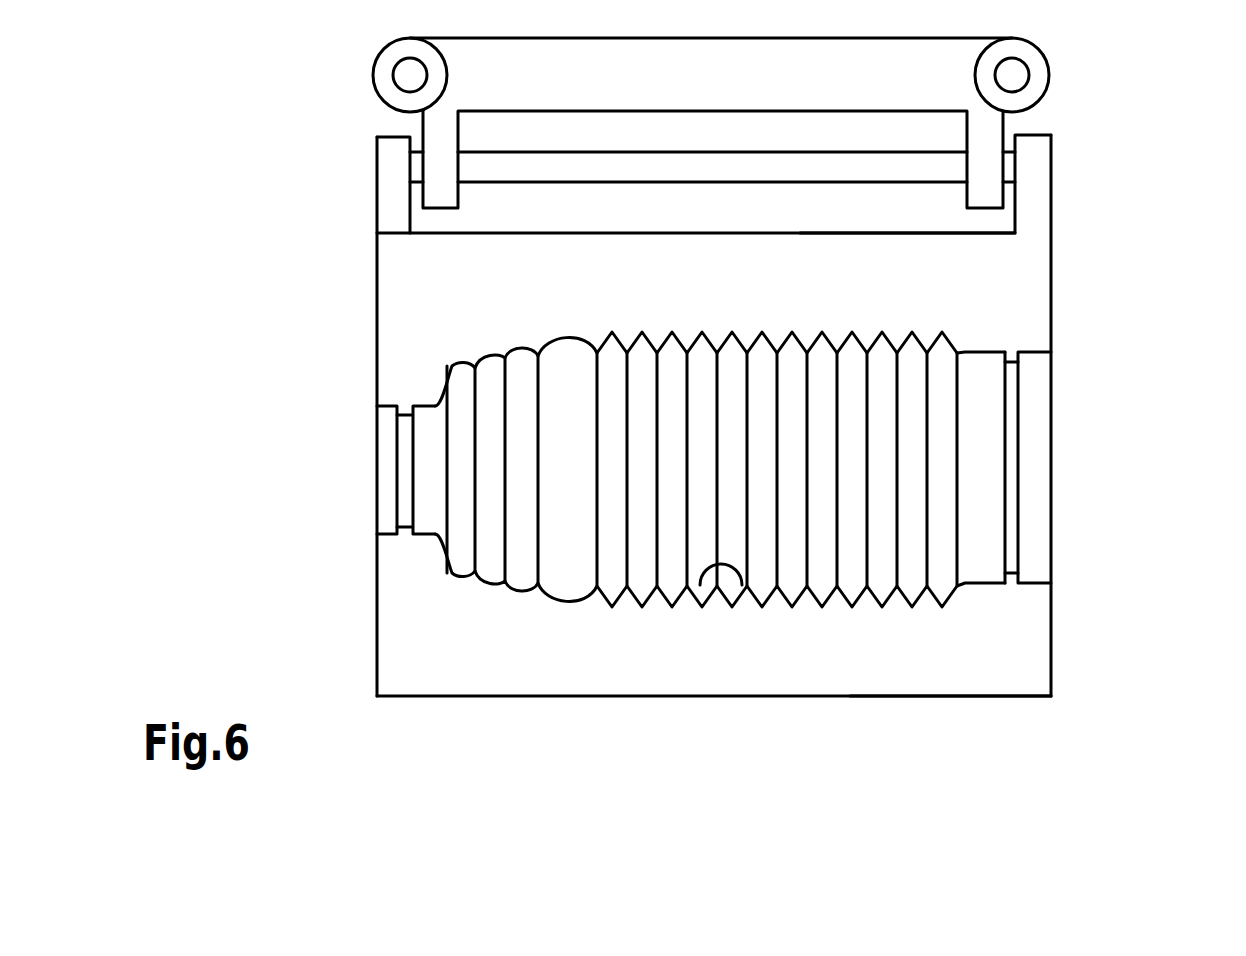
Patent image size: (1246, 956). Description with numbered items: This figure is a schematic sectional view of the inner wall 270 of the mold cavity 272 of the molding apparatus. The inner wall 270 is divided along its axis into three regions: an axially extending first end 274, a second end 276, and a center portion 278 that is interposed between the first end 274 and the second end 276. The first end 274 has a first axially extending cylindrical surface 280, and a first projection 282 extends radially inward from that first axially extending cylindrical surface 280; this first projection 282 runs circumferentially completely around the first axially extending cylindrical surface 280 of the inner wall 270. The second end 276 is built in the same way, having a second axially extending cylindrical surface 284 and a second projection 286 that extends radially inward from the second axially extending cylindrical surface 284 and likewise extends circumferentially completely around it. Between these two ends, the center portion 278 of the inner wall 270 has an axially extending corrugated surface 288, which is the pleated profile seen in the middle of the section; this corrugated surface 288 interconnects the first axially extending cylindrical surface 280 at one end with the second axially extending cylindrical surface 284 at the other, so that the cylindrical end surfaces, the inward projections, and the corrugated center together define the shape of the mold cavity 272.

The inner wall 270 is at (893, 652).
The mold cavity 272 is at (830, 458).
The first end 274 is at (437, 602).
The second end 276 is at (1020, 637).
The center portion 278 is at (685, 657).
The first axially extending cylindrical surface 280 is at (386, 530).
The first projection 282 is at (408, 527).
The second axially extending cylindrical surface 284 is at (1038, 578).
The second projection 286 is at (1020, 552).
The axially extending corrugated surface 288 is at (737, 587).